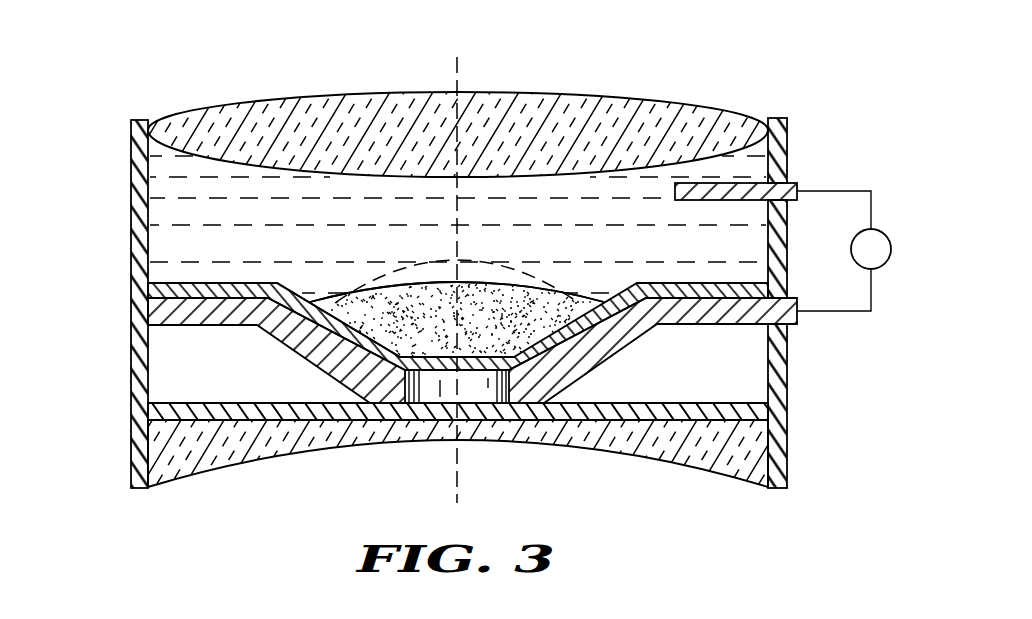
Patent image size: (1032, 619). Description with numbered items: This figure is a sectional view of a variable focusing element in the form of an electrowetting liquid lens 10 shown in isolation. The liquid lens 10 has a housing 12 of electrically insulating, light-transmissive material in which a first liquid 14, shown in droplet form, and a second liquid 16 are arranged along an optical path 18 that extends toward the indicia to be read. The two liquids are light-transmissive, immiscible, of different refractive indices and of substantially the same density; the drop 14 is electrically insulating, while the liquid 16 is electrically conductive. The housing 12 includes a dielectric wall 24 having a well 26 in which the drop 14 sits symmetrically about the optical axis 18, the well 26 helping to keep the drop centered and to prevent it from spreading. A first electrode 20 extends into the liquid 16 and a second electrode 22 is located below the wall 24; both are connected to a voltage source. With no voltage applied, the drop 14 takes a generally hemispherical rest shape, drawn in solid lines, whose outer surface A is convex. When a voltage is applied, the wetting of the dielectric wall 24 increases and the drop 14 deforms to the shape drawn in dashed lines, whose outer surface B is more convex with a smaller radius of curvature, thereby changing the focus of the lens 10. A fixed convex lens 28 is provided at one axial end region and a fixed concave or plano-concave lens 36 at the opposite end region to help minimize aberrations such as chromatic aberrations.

The electrowetting liquid lens 10 is at (124, 107).
The housing 12 is at (131, 158).
The first liquid 14 is at (361, 308).
The second liquid 16 is at (170, 201).
The optical path 18 is at (458, 452).
The first electrode 20 is at (745, 181).
The second electrode 22 is at (705, 307).
The dielectric wall 24 is at (167, 290).
The well 26 is at (293, 292).
The fixed convex lens 28 is at (644, 99).
The fixed concave lens 36 is at (657, 433).
The outer surface of the drop in the rest state A is at (587, 298).
The outer surface of the drop in the deformed state B is at (497, 270).